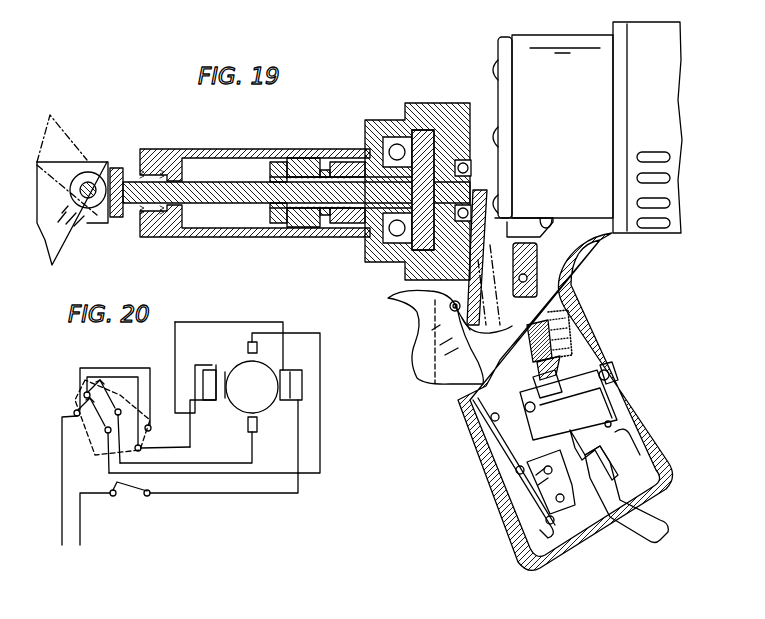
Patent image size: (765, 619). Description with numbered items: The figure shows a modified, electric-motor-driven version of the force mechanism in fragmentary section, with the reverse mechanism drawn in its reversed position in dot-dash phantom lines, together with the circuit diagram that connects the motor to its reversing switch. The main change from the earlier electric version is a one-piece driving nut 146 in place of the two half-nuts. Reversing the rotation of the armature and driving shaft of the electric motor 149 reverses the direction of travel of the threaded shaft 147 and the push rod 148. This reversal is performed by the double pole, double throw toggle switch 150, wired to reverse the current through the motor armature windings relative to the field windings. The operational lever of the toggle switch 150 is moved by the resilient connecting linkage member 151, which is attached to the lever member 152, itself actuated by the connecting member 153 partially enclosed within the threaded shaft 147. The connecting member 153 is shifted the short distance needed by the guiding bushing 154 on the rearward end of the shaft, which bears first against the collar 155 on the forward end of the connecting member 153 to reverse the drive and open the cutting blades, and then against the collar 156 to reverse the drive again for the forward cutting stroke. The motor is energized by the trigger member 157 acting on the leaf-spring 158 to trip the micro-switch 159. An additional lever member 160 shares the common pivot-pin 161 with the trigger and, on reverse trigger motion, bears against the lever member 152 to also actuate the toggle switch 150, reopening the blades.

In FIG. 19, the driving nut 146 is at (303, 160).
In FIG. 19, the threaded shaft 147 is at (350, 212).
In FIG. 19, the push rod 148 is at (222, 178).
In FIG. 19, the electric motor 149 is at (527, 102).
In FIG. 20, the electric motor 149 is at (242, 377).
In FIG. 19, the toggle switch 150 is at (590, 405).
In FIG. 20, the toggle switch 150 is at (126, 456).
In FIG. 19, the resilient connecting linkage member 151 is at (507, 328).
In FIG. 19, the lever member 152 is at (488, 252).
In FIG. 19, the connecting member 153 is at (326, 200).
In FIG. 19, the guiding bushing 154 is at (380, 258).
In FIG. 19, the collar 155 is at (280, 226).
In FIG. 19, the collar 156 is at (462, 186).
In FIG. 19, the trigger member 157 is at (450, 356).
In FIG. 19, the leaf-spring 158 is at (482, 416).
In FIG. 19, the micro-switch 159 is at (551, 493).
In FIG. 20, the micro-switch 159 is at (118, 487).
In FIG. 19, the lever member 160 is at (457, 281).
In FIG. 19, the pivot-pin 161 is at (450, 306).